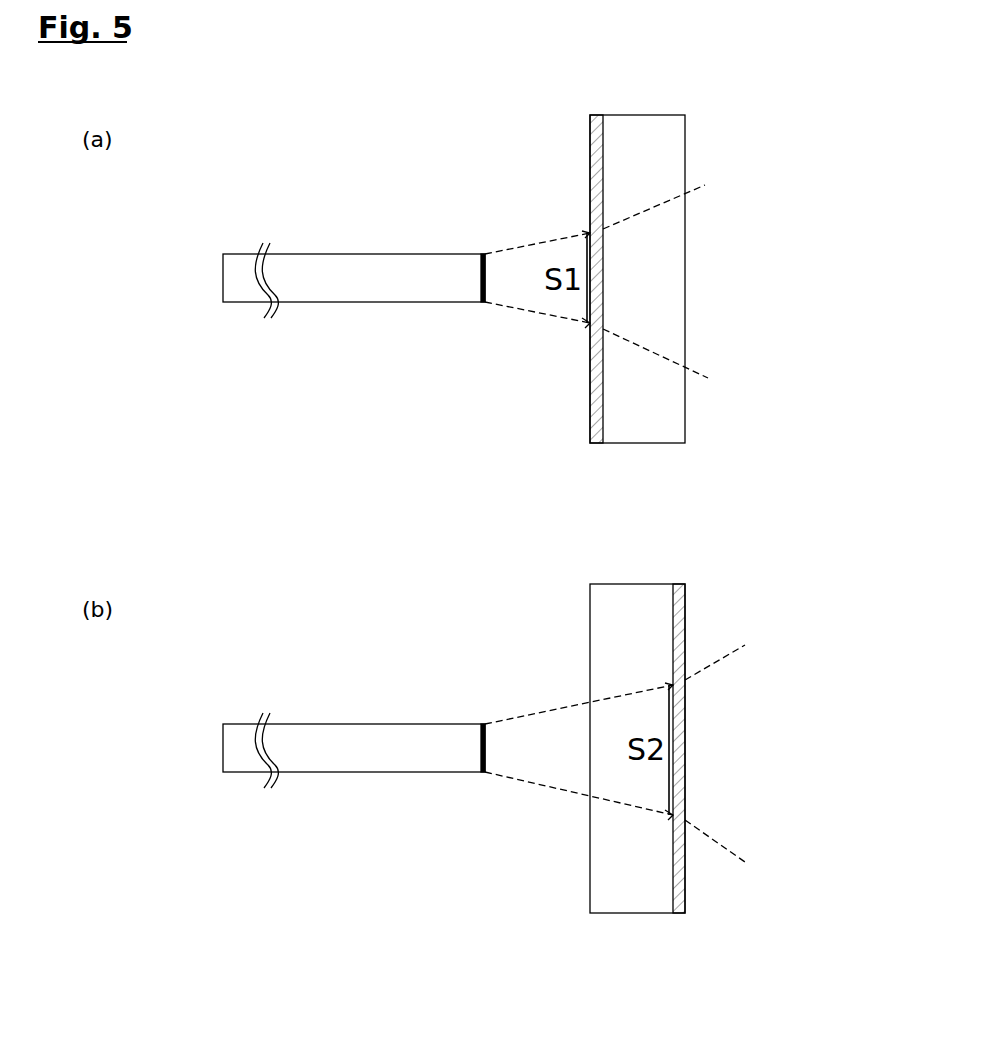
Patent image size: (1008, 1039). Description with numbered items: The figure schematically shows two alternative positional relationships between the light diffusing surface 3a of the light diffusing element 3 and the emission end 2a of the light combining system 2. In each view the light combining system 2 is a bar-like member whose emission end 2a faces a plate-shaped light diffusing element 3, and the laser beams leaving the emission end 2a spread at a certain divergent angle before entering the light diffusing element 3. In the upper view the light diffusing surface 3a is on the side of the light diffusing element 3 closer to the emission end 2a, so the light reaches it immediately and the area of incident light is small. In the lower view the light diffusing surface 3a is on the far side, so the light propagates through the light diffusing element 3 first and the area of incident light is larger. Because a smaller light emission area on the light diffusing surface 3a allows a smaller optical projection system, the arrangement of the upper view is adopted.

The light combining system 2 is at (378, 290).
The emission end 2a is at (482, 308).
The light diffusing element 3 is at (683, 460).
The light diffusing surface 3a is at (596, 416).